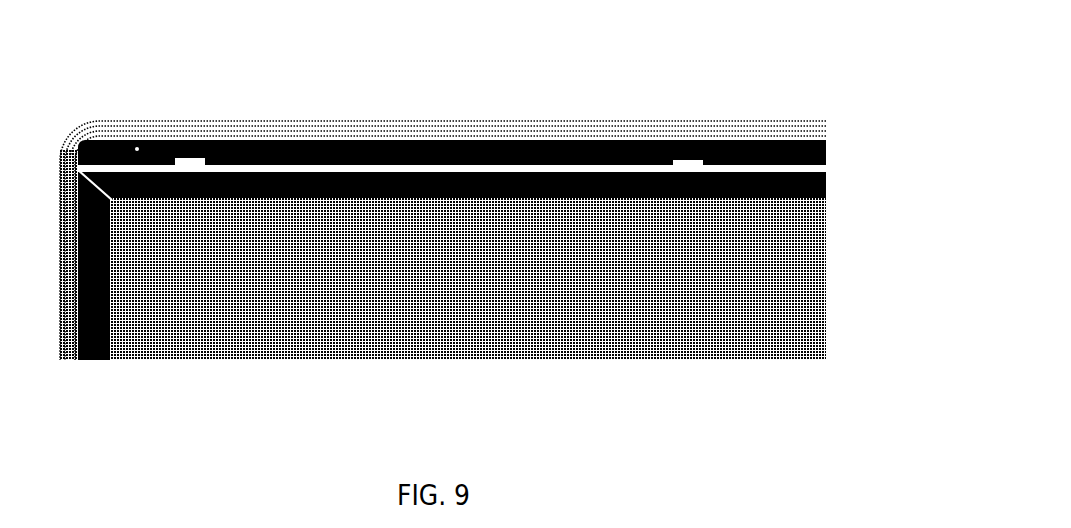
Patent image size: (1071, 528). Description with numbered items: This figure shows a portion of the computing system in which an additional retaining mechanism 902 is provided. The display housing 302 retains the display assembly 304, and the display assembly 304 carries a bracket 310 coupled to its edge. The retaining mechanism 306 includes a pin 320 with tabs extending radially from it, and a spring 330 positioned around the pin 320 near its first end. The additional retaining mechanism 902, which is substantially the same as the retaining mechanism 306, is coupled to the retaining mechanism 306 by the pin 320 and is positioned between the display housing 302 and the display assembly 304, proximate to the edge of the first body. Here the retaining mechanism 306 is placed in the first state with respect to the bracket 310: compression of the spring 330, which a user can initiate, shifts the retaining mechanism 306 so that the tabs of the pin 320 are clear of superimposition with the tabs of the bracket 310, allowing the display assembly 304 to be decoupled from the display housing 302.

The display housing 302 is at (525, 118).
The display assembly 304 is at (827, 180).
The retaining mechanism 306 is at (295, 118).
The bracket 310 is at (193, 157).
The pin 320 is at (360, 148).
The spring 330 is at (110, 138).
The additional retaining mechanism 902 is at (780, 122).